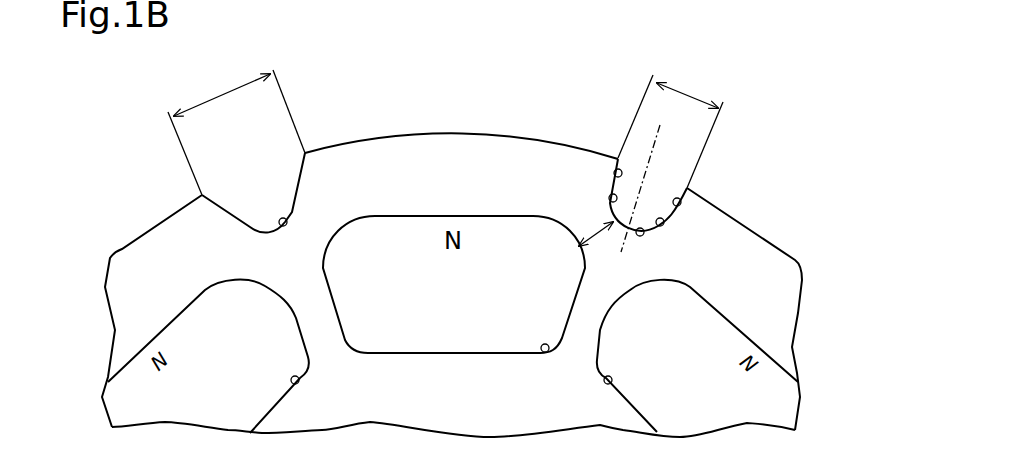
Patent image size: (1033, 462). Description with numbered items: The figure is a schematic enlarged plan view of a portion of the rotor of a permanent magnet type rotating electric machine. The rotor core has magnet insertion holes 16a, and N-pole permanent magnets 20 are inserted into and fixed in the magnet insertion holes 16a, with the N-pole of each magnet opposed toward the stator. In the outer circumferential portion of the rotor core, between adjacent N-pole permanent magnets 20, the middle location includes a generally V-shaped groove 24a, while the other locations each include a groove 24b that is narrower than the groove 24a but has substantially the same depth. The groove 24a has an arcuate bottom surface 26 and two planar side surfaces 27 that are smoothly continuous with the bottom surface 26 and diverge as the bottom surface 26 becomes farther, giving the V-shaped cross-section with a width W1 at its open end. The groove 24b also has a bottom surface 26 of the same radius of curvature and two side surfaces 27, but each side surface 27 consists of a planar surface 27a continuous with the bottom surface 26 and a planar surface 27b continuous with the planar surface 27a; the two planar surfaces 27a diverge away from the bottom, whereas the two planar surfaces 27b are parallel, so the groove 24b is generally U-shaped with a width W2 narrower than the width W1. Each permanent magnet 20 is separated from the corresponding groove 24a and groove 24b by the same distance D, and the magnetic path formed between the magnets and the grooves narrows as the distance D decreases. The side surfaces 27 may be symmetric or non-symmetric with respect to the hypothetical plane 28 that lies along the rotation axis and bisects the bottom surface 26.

The magnet insertion hole 16a is at (547, 352).
The permanent magnet 20 is at (457, 355).
The groove 24a is at (265, 205).
The groove 24b is at (660, 201).
The bottom surface 26 is at (287, 224).
The side surface 27 is at (225, 210).
The planar surface 27a is at (609, 198).
The planar surface 27b is at (614, 173).
The hypothetical plane 28 is at (649, 173).
The width of groove 24a W1 is at (222, 95).
The width of groove 24b W2 is at (688, 96).
The distance D is at (601, 234).